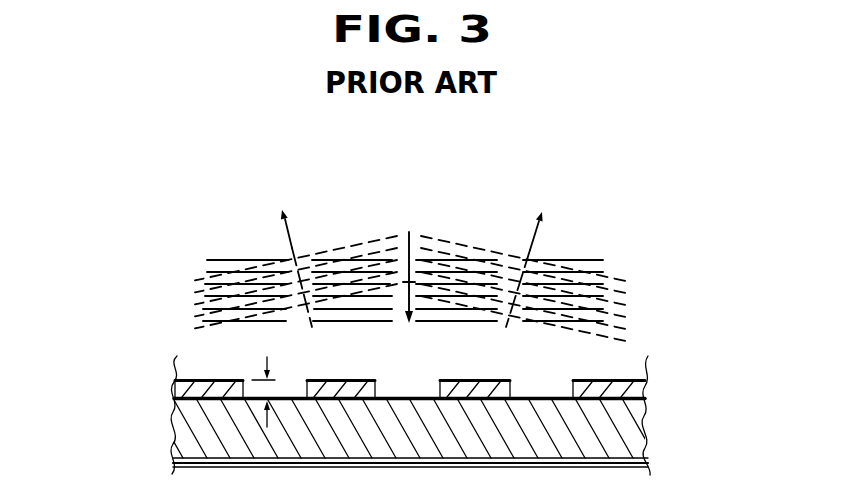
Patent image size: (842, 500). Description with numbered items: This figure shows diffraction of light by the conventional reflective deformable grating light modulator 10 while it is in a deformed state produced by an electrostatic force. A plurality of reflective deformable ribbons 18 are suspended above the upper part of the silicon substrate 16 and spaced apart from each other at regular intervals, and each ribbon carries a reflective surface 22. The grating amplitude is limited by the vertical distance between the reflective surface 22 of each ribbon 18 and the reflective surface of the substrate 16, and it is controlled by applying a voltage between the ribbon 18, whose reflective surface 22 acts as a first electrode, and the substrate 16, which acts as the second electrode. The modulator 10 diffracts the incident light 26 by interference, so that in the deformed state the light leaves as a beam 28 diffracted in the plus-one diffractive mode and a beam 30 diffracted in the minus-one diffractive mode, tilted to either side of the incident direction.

The reflective deformable grating light modulator 10 is at (152, 377).
The silicon substrate 16 is at (643, 417).
The reflective deformable ribbons 18 is at (638, 390).
The reflective surface 22 is at (620, 378).
The incident light 26 is at (655, 269).
The +1 diffractive mode light beam 28 is at (293, 237).
The -1 diffractive mode light beam 30 is at (533, 230).